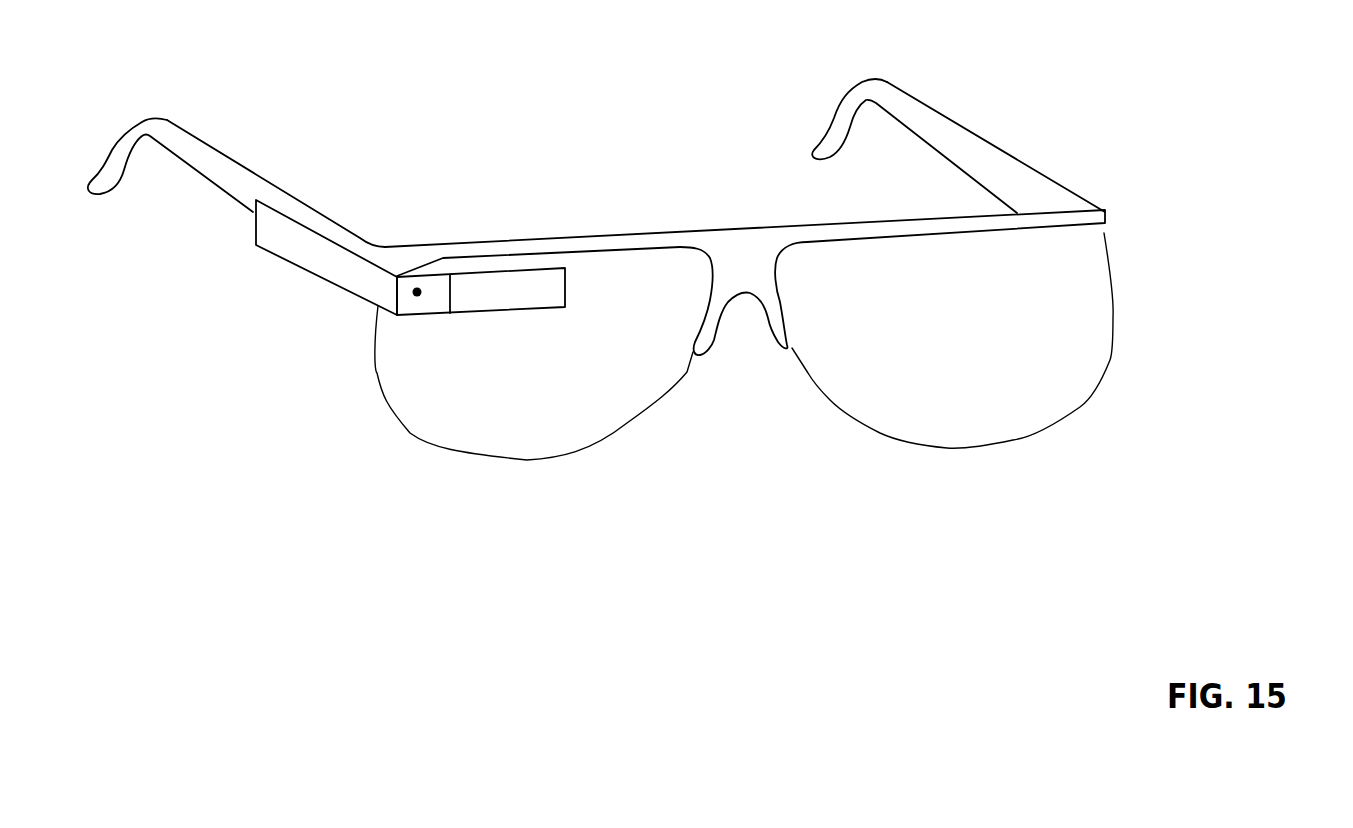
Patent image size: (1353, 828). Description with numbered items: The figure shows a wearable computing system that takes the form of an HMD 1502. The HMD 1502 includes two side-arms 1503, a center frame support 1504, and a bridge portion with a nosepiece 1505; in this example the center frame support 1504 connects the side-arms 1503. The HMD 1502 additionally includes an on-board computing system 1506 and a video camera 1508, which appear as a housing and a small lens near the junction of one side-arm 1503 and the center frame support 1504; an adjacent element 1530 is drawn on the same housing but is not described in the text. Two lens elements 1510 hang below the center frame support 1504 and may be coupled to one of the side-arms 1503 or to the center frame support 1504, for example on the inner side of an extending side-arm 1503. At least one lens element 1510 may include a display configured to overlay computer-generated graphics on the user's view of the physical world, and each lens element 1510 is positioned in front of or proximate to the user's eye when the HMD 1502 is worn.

The HMD 1502 is at (1193, 313).
The side-arms 1503 is at (212, 163).
The center frame support 1504 is at (622, 240).
The nosepiece 1505 is at (770, 287).
The on-board computing system 1506 is at (302, 268).
The video camera 1508 is at (416, 295).
The lens elements 1510 is at (842, 380).
The display housing 1530 is at (512, 312).